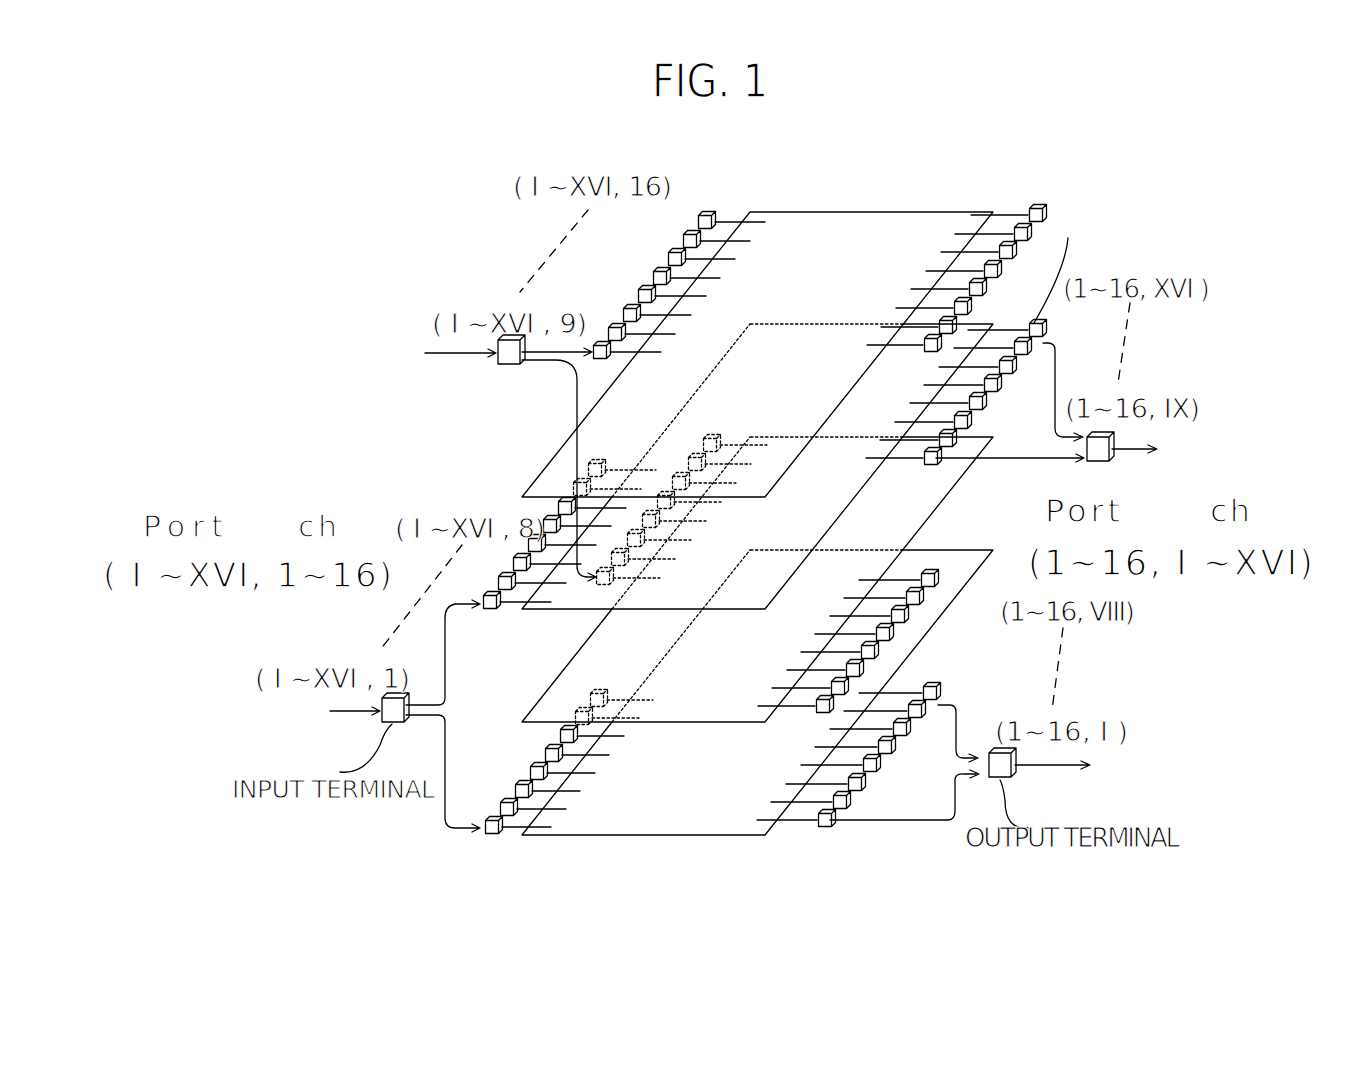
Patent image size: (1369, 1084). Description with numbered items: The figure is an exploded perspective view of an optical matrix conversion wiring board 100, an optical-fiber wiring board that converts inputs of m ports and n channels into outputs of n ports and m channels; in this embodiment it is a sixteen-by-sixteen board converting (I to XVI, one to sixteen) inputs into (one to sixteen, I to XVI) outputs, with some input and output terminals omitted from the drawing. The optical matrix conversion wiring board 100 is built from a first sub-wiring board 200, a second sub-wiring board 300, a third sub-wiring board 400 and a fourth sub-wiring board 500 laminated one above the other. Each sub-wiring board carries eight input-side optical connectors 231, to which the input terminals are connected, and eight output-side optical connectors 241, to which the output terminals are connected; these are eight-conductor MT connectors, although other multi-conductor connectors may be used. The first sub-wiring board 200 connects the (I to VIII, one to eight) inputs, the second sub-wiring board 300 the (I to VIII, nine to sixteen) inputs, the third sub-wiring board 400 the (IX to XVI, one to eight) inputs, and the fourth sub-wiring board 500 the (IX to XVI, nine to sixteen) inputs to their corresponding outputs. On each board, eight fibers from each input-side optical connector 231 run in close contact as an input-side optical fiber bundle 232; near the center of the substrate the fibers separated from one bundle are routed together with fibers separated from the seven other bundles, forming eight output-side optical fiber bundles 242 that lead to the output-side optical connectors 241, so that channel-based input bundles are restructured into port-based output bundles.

The optical matrix conversion wiring board 100 is at (983, 190).
The first sub-wiring board 200 is at (653, 820).
The second sub-wiring board 300 is at (723, 708).
The third sub-wiring board 400 is at (650, 592).
The fourth sub-wiring board 500 is at (843, 212).
The input-side optical connector 231 is at (708, 213).
The input-side optical fiber bundle 232 is at (516, 835).
The output-side optical connector 241 is at (1037, 222).
The output-side optical fiber bundle 242 is at (792, 825).